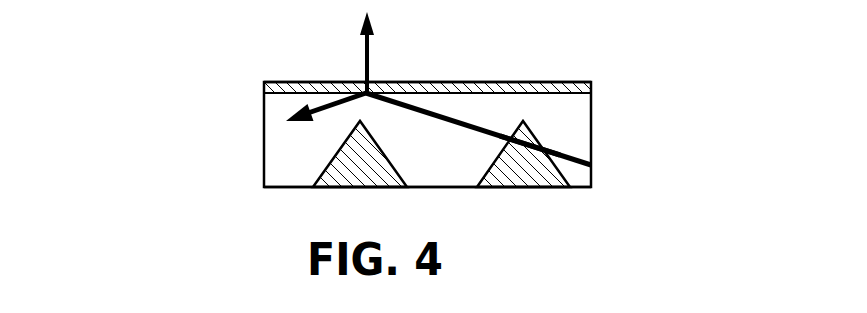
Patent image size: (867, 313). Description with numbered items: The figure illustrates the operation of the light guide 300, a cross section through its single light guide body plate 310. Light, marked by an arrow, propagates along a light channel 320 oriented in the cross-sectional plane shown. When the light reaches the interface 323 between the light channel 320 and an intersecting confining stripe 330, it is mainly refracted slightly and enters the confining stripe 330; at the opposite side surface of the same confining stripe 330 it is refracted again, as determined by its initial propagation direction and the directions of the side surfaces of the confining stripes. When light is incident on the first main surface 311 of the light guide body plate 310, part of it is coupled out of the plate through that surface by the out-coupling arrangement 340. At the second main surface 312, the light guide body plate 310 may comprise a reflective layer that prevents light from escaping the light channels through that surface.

The light guide 300 is at (217, 53).
The light guide body plate 310 is at (572, 137).
The first main surface 311 is at (483, 88).
The second main surface 312 is at (298, 188).
The light channel 320 is at (573, 149).
The interface 323 is at (540, 130).
The confining stripe 330 is at (510, 178).
The out-coupling arrangement 340 is at (310, 88).